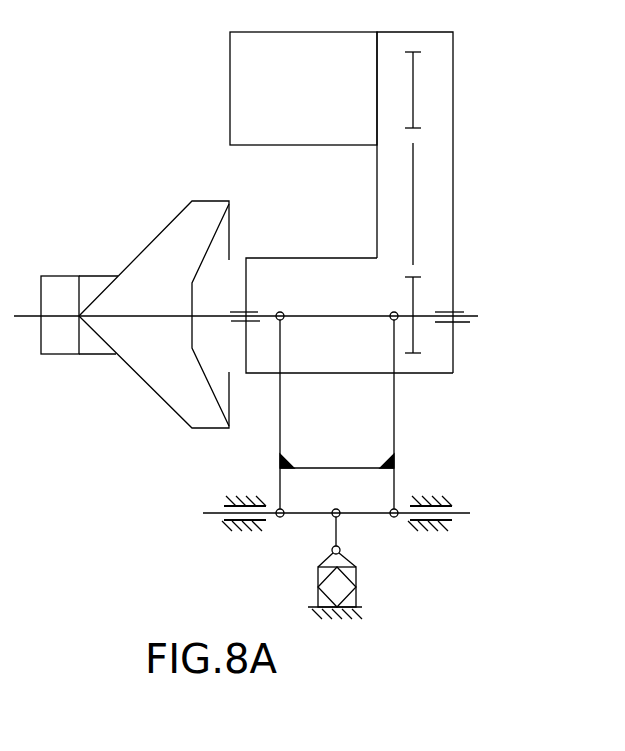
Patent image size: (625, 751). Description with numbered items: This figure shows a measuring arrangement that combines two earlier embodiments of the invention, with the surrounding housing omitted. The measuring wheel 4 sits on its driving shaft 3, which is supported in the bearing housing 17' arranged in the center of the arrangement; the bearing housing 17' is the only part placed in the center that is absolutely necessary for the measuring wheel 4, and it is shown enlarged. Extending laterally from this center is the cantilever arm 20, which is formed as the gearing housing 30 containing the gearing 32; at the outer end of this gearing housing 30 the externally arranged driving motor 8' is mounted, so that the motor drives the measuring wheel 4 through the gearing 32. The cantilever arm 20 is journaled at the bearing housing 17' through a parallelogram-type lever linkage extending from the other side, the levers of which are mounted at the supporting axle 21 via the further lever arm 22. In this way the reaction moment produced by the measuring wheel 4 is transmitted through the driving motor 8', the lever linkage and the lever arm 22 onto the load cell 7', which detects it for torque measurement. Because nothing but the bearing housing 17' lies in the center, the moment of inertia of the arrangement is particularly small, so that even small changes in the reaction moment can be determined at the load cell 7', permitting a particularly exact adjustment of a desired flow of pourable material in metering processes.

The driving shaft 3 is at (216, 311).
The measuring wheel 4 is at (163, 233).
The driving motor 8' is at (266, 91).
The gearing housing 30 is at (377, 183).
The gearing 32 is at (413, 226).
The bearing housing 17' is at (344, 343).
The cantilever arm 20 is at (275, 431).
The supporting axle 21 is at (271, 519).
The lever arm 22 is at (331, 518).
The load cell 7' is at (359, 564).